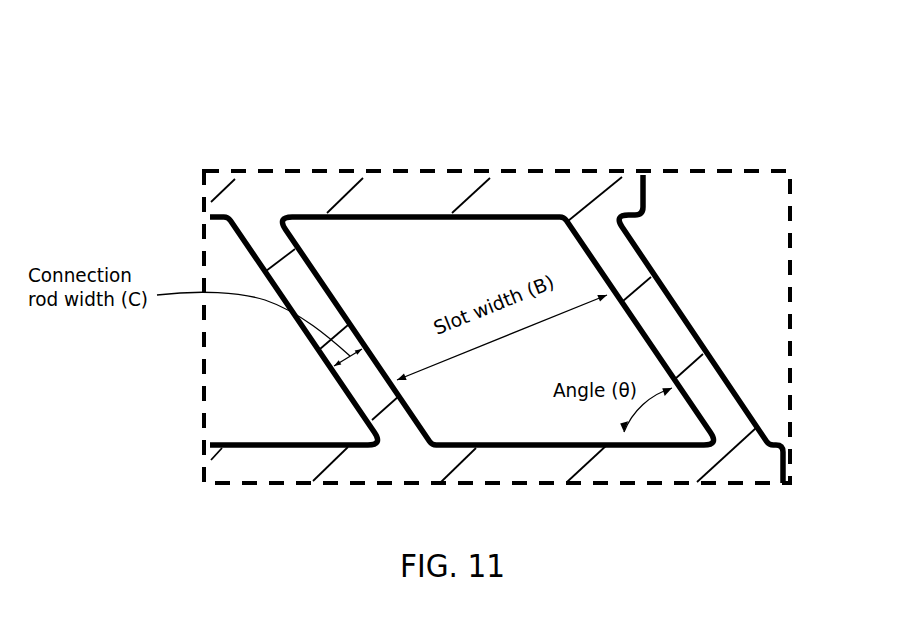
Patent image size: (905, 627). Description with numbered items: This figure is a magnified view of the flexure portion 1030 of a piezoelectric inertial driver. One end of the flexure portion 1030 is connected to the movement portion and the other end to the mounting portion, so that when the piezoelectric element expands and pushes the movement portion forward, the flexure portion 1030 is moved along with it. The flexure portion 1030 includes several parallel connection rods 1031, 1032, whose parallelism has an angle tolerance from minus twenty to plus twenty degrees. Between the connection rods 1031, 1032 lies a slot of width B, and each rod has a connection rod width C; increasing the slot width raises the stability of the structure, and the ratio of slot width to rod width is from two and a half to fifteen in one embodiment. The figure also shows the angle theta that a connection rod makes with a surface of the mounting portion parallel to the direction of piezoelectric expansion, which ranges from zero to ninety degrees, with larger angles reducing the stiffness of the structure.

The flexure portion 1030 is at (642, 135).
The connection rod 1031 is at (289, 274).
The connection rod 1032 is at (613, 251).